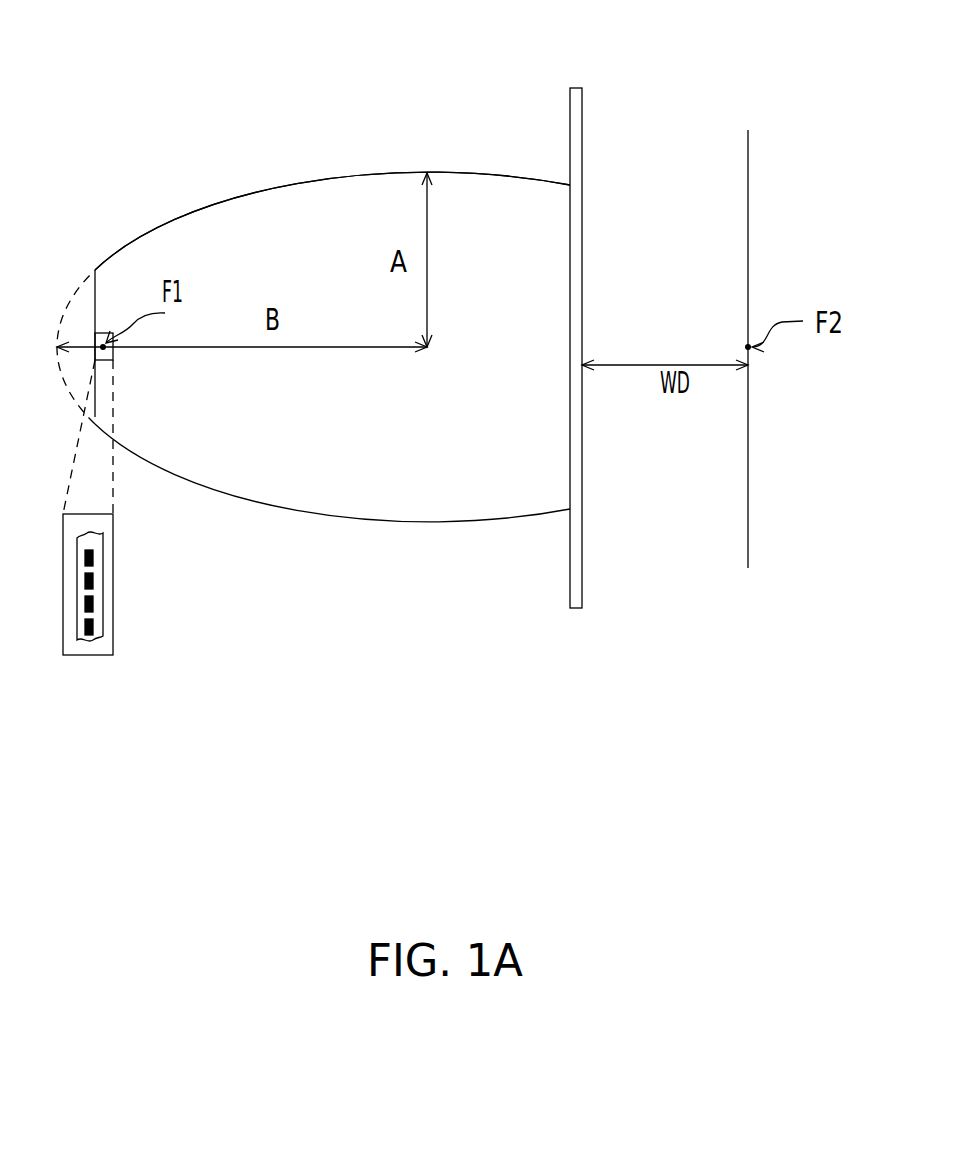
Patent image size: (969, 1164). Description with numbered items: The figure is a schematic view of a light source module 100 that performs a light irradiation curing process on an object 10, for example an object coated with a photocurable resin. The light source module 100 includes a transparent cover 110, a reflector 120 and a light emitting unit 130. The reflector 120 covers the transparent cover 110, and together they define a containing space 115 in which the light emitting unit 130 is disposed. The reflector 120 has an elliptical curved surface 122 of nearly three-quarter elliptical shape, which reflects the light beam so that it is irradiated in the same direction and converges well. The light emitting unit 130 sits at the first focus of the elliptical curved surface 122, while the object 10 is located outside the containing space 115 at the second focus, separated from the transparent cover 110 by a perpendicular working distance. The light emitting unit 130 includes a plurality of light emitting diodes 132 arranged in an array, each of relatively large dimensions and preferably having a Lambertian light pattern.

The object 10 is at (748, 174).
The light source module 100 is at (619, 653).
The transparent cover 110 is at (578, 88).
The containing space 115 is at (512, 288).
The reflector 120 is at (502, 173).
The elliptical curved surface 122 is at (367, 175).
The light emitting unit 130 is at (183, 535).
The light emitting diodes 132 is at (93, 559).